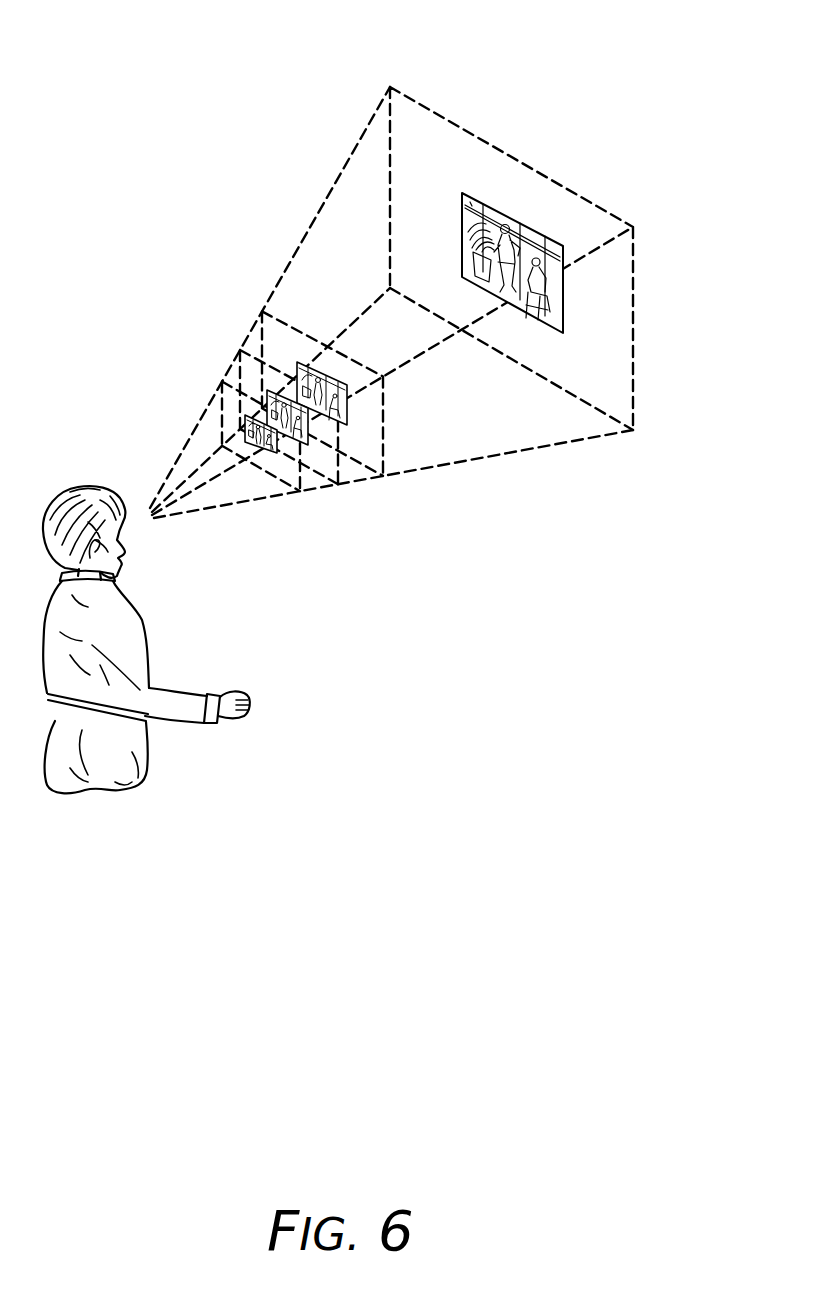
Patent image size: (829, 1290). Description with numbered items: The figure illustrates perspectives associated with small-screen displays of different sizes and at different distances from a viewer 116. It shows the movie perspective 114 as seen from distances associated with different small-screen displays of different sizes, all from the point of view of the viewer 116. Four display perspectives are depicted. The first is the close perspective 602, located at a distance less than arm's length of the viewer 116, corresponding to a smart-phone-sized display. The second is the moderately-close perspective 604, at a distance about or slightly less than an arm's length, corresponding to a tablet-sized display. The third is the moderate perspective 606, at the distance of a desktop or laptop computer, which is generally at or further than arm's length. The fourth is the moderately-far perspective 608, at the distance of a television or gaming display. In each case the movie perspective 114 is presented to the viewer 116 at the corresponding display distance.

The movie perspective 114 is at (368, 472).
The viewer 116 is at (138, 840).
The close perspective 602 is at (205, 364).
The moderately-close perspective 604 is at (225, 322).
The moderate perspective 606 is at (247, 281).
The moderately-far perspective 608 is at (378, 64).